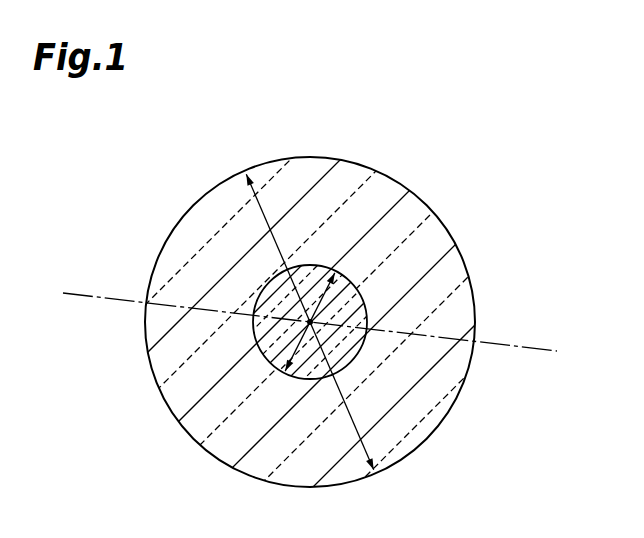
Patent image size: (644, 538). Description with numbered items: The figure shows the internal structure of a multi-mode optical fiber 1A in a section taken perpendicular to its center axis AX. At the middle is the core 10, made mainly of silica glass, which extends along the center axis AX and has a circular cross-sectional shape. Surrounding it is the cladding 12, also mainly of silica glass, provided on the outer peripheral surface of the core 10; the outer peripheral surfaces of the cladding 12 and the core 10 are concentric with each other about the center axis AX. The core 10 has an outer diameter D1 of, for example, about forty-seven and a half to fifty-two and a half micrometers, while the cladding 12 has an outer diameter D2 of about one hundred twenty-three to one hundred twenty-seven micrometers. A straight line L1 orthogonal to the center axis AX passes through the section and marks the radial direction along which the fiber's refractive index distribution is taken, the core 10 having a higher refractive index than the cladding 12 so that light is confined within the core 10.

The multi-mode optical fiber 1A is at (460, 162).
The core 10 is at (310, 380).
The cladding 12 is at (410, 443).
The center axis AX is at (312, 321).
The straight line L1 is at (537, 354).
The outer diameter of the core D1 is at (268, 357).
The outer diameter of the cladding D2 is at (365, 450).